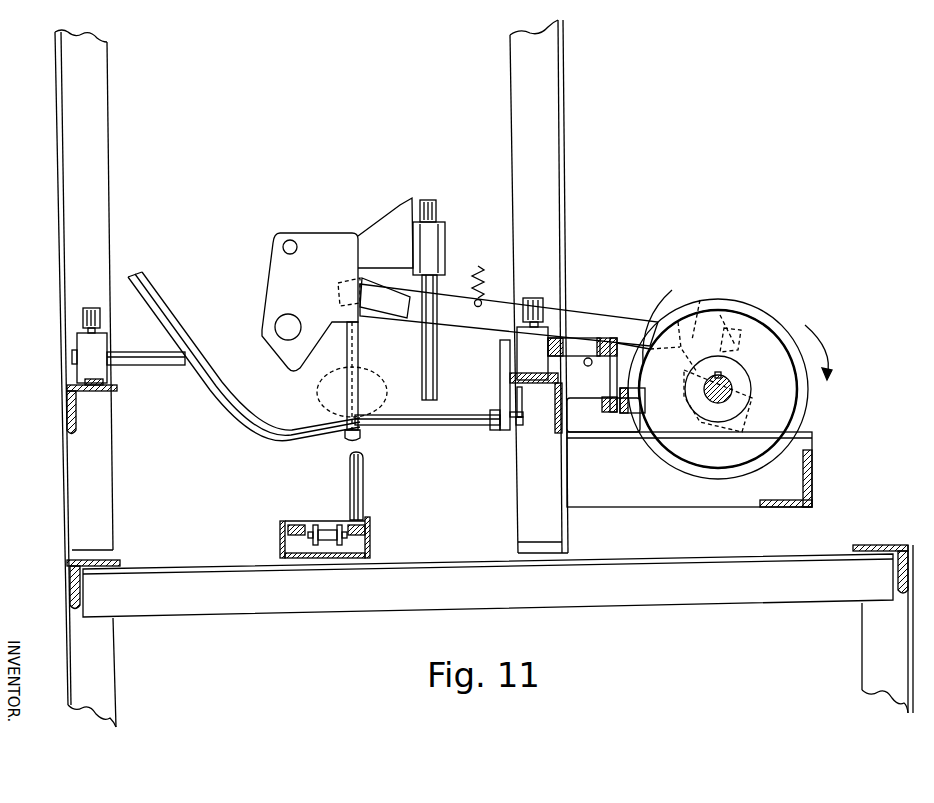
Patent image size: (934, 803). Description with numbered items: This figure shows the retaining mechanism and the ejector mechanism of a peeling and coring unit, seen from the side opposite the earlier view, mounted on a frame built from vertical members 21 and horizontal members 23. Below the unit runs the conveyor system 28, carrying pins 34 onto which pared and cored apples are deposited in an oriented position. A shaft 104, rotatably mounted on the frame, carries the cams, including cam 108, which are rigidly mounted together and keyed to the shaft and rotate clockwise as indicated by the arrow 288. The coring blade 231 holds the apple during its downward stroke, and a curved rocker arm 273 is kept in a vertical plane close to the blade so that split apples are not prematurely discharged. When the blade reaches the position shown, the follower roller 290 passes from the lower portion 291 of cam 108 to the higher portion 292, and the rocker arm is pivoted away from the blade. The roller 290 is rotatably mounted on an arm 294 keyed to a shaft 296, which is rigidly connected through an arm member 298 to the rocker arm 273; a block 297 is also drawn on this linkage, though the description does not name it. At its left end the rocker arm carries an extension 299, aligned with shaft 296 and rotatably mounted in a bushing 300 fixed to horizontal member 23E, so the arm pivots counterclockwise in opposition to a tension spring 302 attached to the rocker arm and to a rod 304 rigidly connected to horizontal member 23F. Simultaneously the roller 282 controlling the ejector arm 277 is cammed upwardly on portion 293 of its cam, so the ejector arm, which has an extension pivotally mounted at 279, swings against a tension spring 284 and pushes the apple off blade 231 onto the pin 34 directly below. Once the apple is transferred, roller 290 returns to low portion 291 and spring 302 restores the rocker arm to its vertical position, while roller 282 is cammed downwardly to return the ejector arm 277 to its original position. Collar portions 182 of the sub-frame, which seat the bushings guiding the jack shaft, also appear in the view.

The vertical members 21 is at (68, 505).
The horizontal members 23 is at (481, 602).
The horizontal member 23E is at (93, 392).
The horizontal member 23F is at (536, 404).
The conveyor system 28 is at (276, 546).
The pins 34 is at (350, 482).
The shaft 104 is at (728, 384).
The cam 108 is at (758, 470).
The collar portions 182 is at (440, 233).
The coring blade 231 is at (360, 346).
The rocker arm 273 is at (414, 426).
The ejector arm 277 is at (622, 318).
The pivot 279 is at (586, 367).
The roller 282 is at (742, 309).
The tension spring 284 is at (476, 268).
The arrow 288 is at (834, 352).
The follower roller 290 is at (628, 415).
The lower portion 291 is at (716, 300).
The higher portion 292 is at (666, 463).
The portion 293 is at (715, 297).
The arm 294 is at (612, 392).
The shaft 296 is at (584, 340).
The slide block 297 is at (525, 348).
The arm member 298 is at (500, 378).
The extension 299 is at (127, 368).
The bushing 300 is at (85, 350).
The tension spring 302 is at (517, 406).
The rod 304 is at (517, 424).